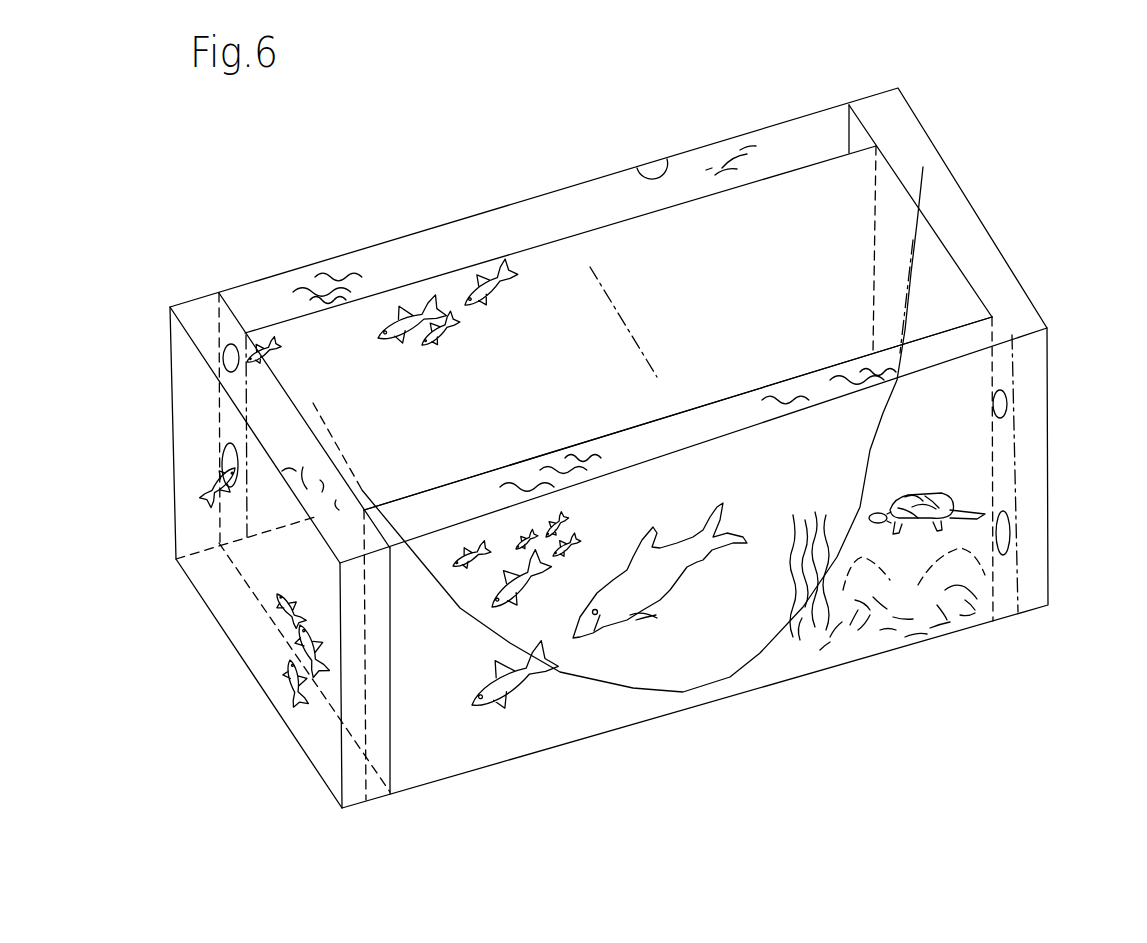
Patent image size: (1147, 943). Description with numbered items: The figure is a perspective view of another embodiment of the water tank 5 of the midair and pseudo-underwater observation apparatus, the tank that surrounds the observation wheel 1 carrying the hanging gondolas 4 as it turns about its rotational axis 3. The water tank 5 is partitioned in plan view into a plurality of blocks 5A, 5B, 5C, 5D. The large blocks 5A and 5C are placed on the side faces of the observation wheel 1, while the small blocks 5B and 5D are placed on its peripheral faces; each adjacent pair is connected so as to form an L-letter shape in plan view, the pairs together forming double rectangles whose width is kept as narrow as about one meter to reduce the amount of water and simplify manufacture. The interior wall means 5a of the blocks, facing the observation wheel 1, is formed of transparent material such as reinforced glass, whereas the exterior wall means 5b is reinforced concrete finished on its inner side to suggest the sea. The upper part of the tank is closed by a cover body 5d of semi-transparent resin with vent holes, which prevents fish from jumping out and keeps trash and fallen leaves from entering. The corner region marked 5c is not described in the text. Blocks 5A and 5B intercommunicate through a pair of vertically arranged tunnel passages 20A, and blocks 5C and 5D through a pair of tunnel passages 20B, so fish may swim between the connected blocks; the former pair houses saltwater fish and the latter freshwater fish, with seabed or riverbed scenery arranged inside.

The observation wheel 1 is at (670, 364).
The gondolas 4 is at (923, 181).
The rotational axis 3 is at (620, 317).
The water tank 5 is at (1016, 174).
The block 5A is at (1020, 463).
The block 5B is at (980, 217).
The block 5C is at (503, 207).
The block 5D is at (252, 627).
The interior wall means 5a is at (946, 332).
The exterior wall means 5b is at (667, 160).
The corner post 5c is at (322, 738).
The cover body 5d is at (430, 254).
The tunnel passages 20A is at (1013, 392).
The tunnel passages 20B is at (226, 364).